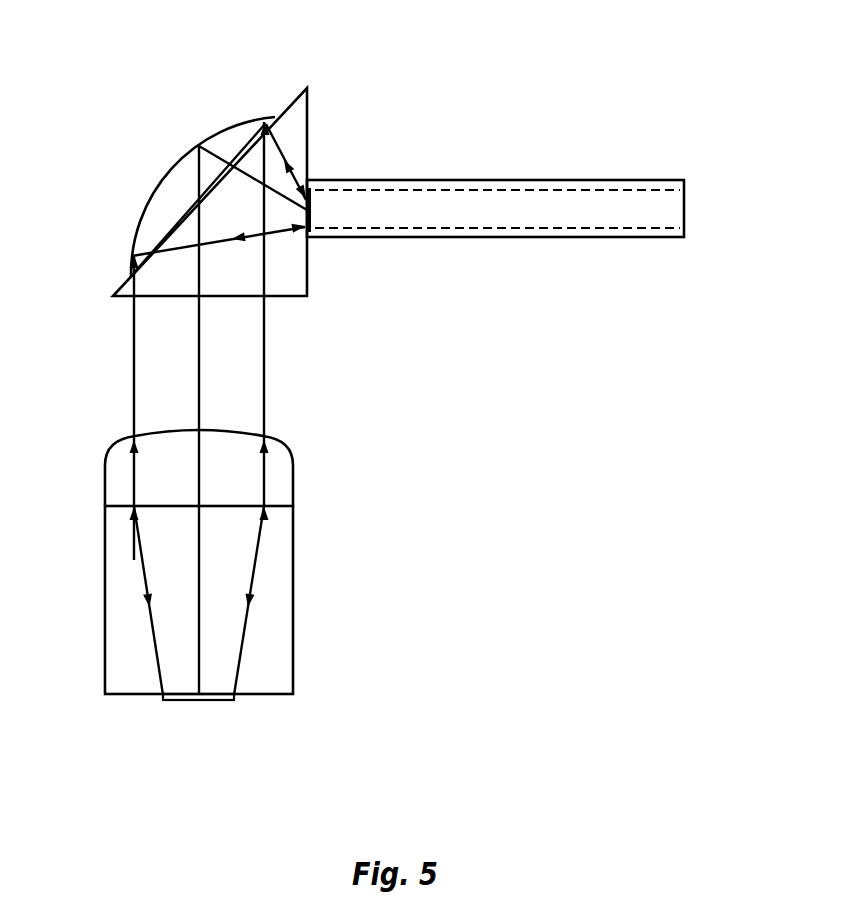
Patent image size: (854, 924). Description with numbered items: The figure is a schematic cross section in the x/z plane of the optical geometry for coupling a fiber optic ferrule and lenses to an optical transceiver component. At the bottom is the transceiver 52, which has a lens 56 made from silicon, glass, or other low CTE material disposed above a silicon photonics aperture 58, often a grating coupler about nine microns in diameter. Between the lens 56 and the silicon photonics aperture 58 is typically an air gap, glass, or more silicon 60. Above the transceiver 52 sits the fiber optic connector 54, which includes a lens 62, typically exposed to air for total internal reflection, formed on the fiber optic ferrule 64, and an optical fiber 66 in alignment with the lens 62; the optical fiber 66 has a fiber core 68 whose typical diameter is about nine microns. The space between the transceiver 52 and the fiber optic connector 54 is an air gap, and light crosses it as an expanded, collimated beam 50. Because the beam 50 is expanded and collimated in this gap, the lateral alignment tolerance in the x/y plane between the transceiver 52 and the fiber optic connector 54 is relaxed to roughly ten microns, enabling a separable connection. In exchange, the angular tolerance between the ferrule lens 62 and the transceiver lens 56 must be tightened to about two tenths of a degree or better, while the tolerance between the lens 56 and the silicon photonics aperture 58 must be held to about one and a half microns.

The expanded collimated beam 50 is at (265, 360).
The transceiver 52 is at (89, 442).
The fiber optic connector 54 is at (82, 120).
The lens 56 is at (293, 462).
The silicon photonics aperture 58 is at (218, 702).
The air gap, glass, or silicon 60 is at (293, 598).
The lens 62 is at (222, 125).
The fiber optic ferrule 64 is at (308, 260).
The optical fiber 66 is at (552, 178).
The fiber core 68 is at (613, 210).